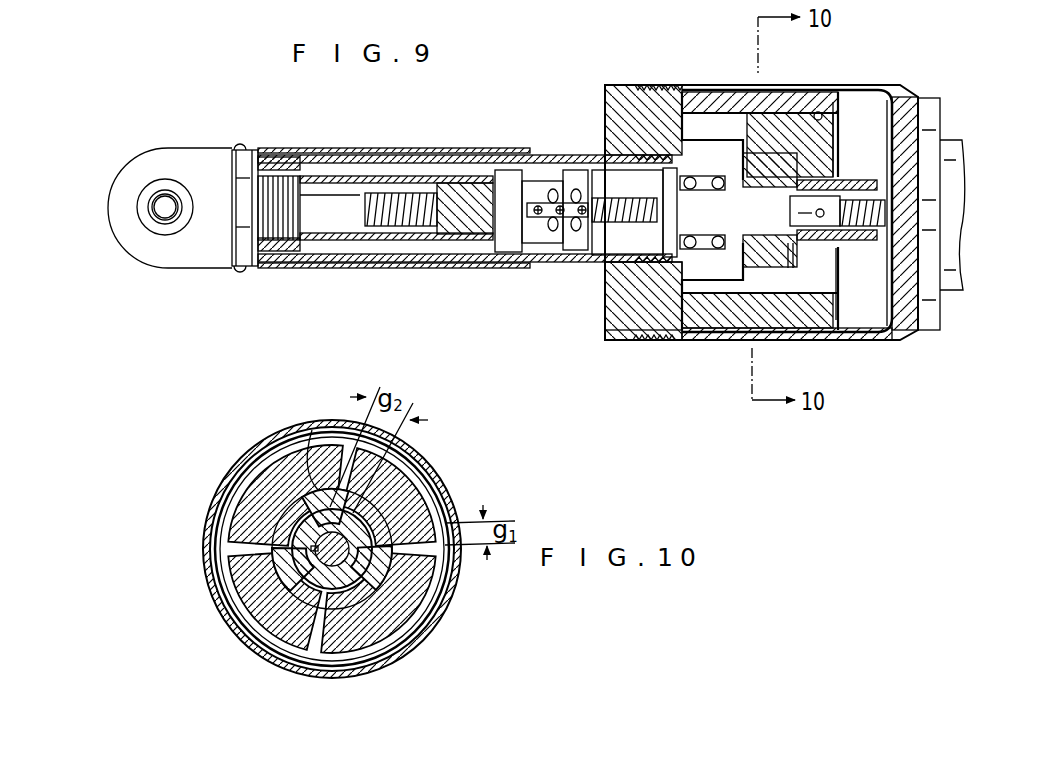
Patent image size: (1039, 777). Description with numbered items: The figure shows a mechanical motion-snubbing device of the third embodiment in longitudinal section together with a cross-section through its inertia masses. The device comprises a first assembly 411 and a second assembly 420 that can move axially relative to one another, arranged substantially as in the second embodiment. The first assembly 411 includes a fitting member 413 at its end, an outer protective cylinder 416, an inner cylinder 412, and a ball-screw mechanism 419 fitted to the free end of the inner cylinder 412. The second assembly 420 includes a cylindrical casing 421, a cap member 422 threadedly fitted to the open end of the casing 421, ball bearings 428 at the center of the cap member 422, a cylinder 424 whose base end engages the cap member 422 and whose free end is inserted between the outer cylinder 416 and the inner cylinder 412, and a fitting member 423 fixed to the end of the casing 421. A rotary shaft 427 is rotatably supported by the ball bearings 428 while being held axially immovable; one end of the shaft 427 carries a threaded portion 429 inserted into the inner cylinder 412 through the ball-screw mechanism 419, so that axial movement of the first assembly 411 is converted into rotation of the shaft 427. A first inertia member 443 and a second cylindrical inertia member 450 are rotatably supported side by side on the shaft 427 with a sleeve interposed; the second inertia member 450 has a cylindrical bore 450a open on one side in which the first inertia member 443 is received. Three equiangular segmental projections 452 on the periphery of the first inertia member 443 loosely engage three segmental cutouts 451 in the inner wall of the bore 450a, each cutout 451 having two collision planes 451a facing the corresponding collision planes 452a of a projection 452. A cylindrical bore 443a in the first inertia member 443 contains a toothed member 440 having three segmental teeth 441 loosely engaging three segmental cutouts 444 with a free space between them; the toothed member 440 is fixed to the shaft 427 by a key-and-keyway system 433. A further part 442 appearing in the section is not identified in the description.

In FIG. 9, the fitting member 413 is at (208, 158).
In FIG. 9, the first assembly 411 is at (243, 274).
In FIG. 9, the inner cylinder 412 is at (298, 262).
In FIG. 9, the outer protective cylinder 416 is at (343, 270).
In FIG. 9, the cylinder 424 is at (556, 156).
In FIG. 9, the threaded portion 429 is at (366, 210).
In FIG. 9, the ball-screw mechanism 419 is at (553, 222).
In FIG. 9, the ball bearings 428 is at (668, 172).
In FIG. 9, the rotary shaft 427 is at (662, 227).
In FIG. 10, the rotary shaft 427 is at (340, 580).
In FIG. 9, the key-and-keyway system 433 is at (734, 219).
In FIG. 9, the toothed member 440 is at (770, 176).
In FIG. 10, the toothed member 440 is at (250, 506).
In FIG. 9, the second assembly 420 is at (640, 345).
In FIG. 9, the cap member 422 is at (612, 300).
In FIG. 9, the casing 421 is at (718, 342).
In FIG. 10, the casing 421 is at (462, 578).
In FIG. 9, the second inertia member 450 is at (843, 112).
In FIG. 10, the second inertia member 450 is at (425, 632).
In FIG. 9, the segmental projections 452 is at (717, 112).
In FIG. 10, the segmental projections 452 is at (428, 474).
In FIG. 9, the first inertia member 443 is at (800, 112).
In FIG. 10, the first inertia member 443 is at (430, 612).
In FIG. 9, the cylindrical bore 443a is at (768, 334).
In FIG. 10, the cylindrical bore 443a is at (330, 670).
In FIG. 9, the segmental cutouts 451 is at (828, 112).
In FIG. 10, the segmental cutouts 451 is at (440, 492).
In FIG. 9, the pin 442 is at (846, 320).
In FIG. 9, the cylindrical bore 450a is at (808, 335).
In FIG. 10, the cylindrical bore 450a is at (222, 617).
In FIG. 9, the fitting member 423 is at (957, 200).
In FIG. 10, the segmental teeth 441 is at (312, 430).
In FIG. 10, the collision planes 452a is at (268, 472).
In FIG. 10, the segmental cutouts 444 is at (253, 578).
In FIG. 10, the collision planes 451a is at (285, 645).